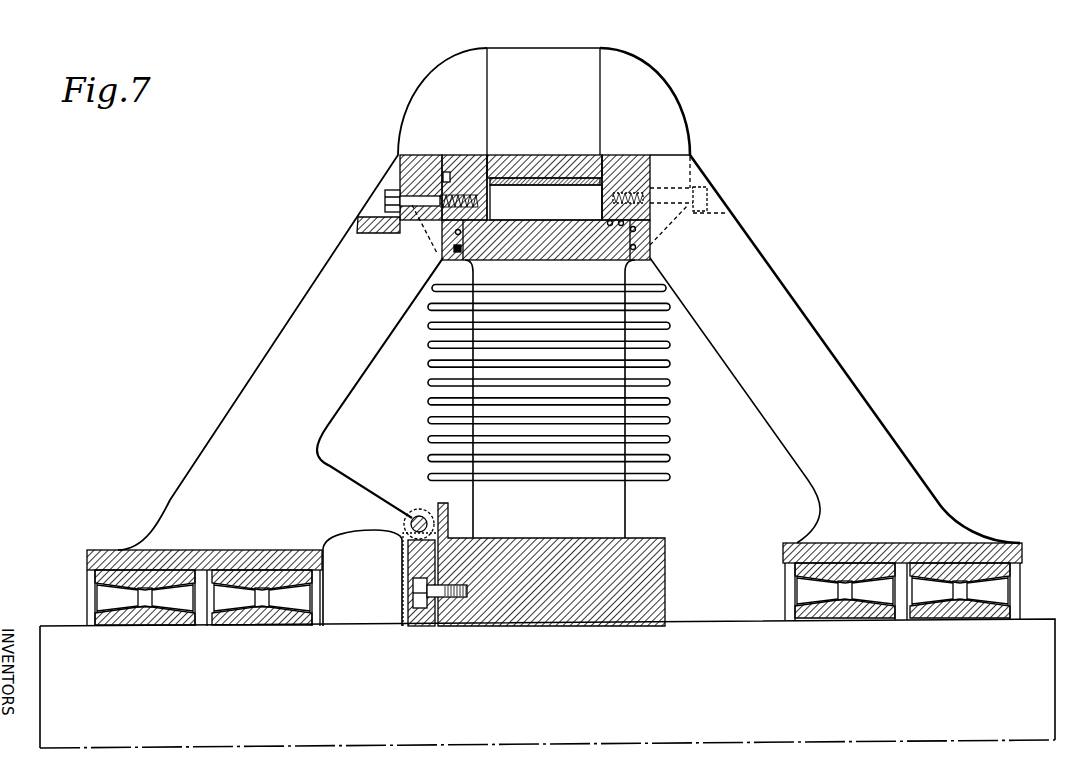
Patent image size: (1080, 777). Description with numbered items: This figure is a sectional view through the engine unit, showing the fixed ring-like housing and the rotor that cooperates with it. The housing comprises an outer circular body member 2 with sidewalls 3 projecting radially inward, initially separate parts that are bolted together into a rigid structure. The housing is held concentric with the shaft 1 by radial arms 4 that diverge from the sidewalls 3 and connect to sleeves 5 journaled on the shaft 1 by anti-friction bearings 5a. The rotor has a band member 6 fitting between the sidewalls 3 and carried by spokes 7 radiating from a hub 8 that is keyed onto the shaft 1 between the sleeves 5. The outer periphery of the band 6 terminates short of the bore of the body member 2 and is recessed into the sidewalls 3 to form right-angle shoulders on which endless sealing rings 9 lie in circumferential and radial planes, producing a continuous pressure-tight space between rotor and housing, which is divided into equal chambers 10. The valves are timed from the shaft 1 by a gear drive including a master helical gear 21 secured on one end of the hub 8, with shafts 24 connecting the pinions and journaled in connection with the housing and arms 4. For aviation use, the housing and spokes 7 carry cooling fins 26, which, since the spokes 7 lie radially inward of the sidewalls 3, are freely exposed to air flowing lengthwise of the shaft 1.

The shaft 1 is at (723, 640).
The outer circular body member 2 is at (520, 163).
The sidewalls 3 is at (463, 165).
The radial arms 4 is at (290, 366).
The sleeves 5 is at (223, 550).
The anti-friction bearings 5a is at (233, 597).
The band member 6 is at (533, 243).
The spokes 7 is at (598, 515).
The hub 8 is at (665, 545).
The sealing rings 9 is at (440, 245).
The chambers 10 is at (556, 198).
The master helical gear 21 is at (422, 552).
The shafts 24 is at (400, 535).
The cooling fins 26 is at (633, 82).